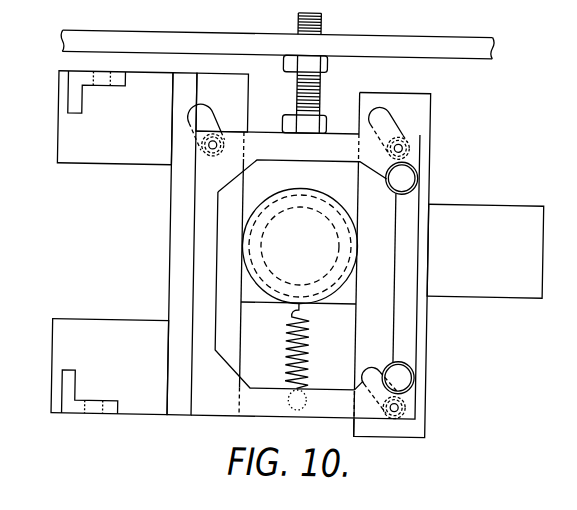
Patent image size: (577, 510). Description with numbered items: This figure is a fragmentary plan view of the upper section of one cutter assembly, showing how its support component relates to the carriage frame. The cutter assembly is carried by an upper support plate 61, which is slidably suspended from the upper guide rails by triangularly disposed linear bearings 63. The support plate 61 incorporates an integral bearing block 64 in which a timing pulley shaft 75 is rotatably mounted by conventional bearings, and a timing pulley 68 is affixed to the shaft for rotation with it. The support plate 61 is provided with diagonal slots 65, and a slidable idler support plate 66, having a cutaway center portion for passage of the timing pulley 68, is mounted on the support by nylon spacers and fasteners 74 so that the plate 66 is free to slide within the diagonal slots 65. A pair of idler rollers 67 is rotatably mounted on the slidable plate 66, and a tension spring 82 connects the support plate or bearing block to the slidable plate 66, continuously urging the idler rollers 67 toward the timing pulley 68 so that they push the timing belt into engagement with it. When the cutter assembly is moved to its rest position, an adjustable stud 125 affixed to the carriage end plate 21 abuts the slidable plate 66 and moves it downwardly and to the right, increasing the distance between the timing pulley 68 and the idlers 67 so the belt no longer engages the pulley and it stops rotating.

The end plate 21 is at (439, 45).
The adjustable stud 125 is at (320, 97).
The linear bearing 63 is at (126, 167).
The upper support plate 61 is at (218, 419).
The bearing block 64 is at (259, 313).
The slidable idler support plate 66 is at (418, 348).
The diagonal slots 65 is at (198, 117).
The fasteners 74 is at (213, 143).
The lower timing pulley shaft 75 is at (400, 145).
The idler rollers 67 is at (414, 171).
The upper timing pulley 68 is at (351, 282).
The tension spring 82 is at (312, 333).